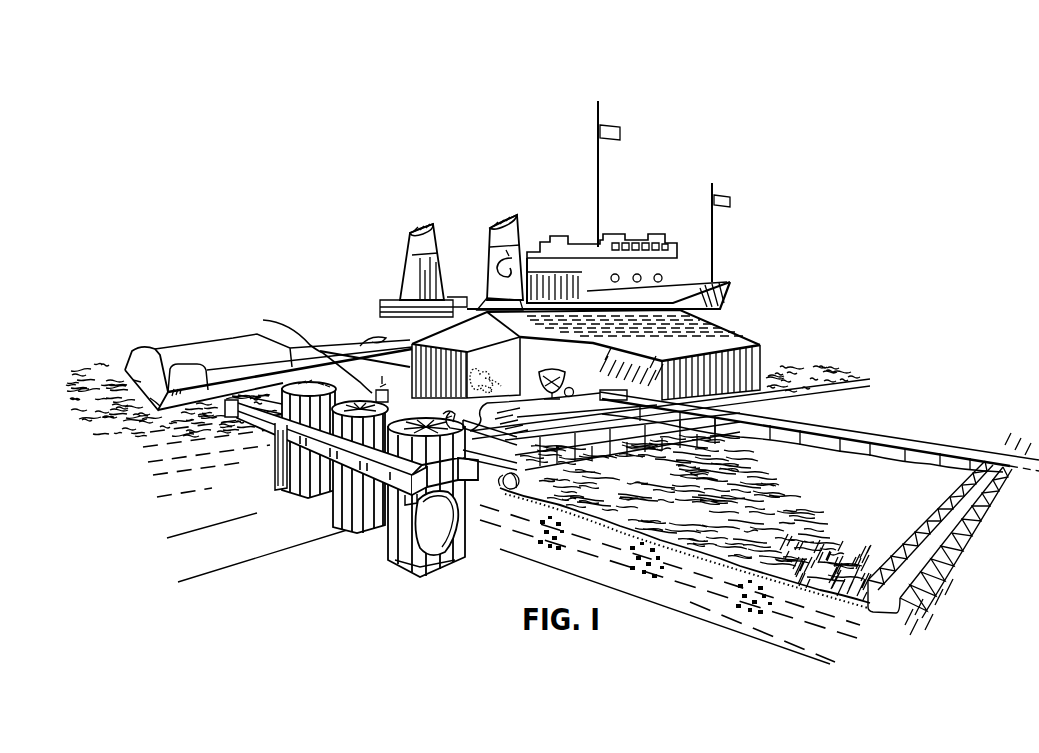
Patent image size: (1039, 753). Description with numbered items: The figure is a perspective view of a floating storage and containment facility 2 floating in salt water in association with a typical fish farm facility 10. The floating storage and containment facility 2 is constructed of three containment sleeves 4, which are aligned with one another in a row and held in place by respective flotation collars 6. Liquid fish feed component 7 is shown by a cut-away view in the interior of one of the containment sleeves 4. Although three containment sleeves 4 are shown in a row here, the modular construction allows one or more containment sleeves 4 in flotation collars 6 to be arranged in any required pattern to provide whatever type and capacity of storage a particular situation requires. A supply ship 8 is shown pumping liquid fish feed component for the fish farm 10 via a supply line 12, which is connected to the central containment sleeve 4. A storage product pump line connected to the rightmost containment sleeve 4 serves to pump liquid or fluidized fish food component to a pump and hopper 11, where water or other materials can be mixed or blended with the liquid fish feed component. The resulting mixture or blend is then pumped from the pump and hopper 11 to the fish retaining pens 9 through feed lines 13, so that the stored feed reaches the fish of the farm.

The floating storage and containment facility 2 is at (252, 364).
The containment sleeve 4 is at (378, 476).
The flotation collar 6 is at (278, 455).
The liquid fish feed component 7 is at (460, 530).
The supply ship 8 is at (667, 278).
The fish retaining pens 9 is at (813, 502).
The fish farm facility 10 is at (780, 362).
The pump and hopper 11 is at (558, 372).
The supply line 12 is at (324, 350).
The feed lines 13 is at (815, 421).